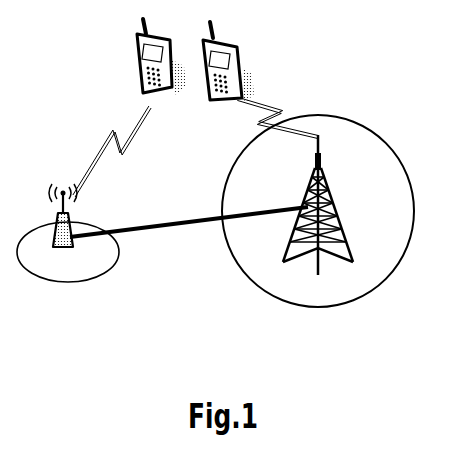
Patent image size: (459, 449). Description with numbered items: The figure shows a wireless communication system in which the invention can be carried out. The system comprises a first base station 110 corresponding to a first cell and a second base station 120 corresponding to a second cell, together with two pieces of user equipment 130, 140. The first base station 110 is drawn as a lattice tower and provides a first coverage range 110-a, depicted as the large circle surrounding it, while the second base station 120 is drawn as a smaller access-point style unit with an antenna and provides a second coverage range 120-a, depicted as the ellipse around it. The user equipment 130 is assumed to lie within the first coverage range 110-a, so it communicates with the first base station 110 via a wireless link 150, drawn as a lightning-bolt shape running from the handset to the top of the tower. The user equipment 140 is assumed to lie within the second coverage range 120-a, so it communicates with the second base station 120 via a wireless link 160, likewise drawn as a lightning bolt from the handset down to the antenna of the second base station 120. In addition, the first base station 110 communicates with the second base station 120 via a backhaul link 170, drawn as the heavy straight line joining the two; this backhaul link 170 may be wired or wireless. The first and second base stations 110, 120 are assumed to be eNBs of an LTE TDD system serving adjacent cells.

The first base station 110 is at (318, 219).
The first coverage range 110-a is at (378, 131).
The second base station 120 is at (63, 230).
The second coverage range 120-a is at (79, 282).
The user equipment 130 is at (228, 75).
The user equipment 140 is at (161, 69).
The wireless link 150 is at (277, 105).
The wireless link 160 is at (112, 151).
The backhaul link 170 is at (189, 222).